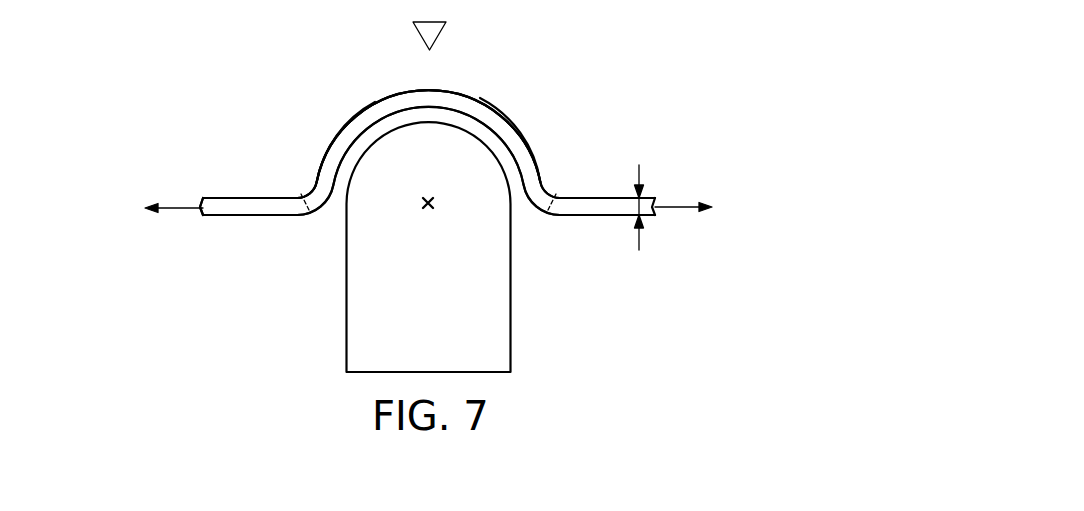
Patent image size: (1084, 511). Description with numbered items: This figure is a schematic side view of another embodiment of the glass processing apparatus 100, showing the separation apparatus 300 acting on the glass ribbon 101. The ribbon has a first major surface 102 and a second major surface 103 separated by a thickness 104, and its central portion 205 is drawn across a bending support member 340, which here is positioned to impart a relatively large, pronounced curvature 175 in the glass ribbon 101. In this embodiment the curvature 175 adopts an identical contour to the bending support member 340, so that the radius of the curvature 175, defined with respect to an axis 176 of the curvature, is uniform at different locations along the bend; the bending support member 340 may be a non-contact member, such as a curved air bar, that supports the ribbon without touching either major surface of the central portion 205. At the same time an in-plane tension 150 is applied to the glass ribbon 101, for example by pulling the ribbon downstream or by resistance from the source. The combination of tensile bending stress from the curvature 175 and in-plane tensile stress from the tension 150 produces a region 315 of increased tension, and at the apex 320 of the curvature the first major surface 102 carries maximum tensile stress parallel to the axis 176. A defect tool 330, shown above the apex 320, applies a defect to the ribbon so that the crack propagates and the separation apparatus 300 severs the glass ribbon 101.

The glass processing apparatus 100 is at (732, 103).
The glass ribbon 101 is at (223, 214).
The first major surface 102 is at (597, 197).
The second major surface 103 is at (612, 218).
The thickness 104 is at (640, 247).
The in-plane tension 150 is at (430, 207).
The curvature 175 is at (308, 125).
The axis of the curvature 176 is at (428, 208).
The central portion 205 is at (247, 207).
The separation apparatus 300 is at (605, 97).
The region of increased tension 315 is at (505, 112).
The apex 320 is at (429, 90).
The defect tool 330 is at (414, 34).
The bending support member 340 is at (512, 350).